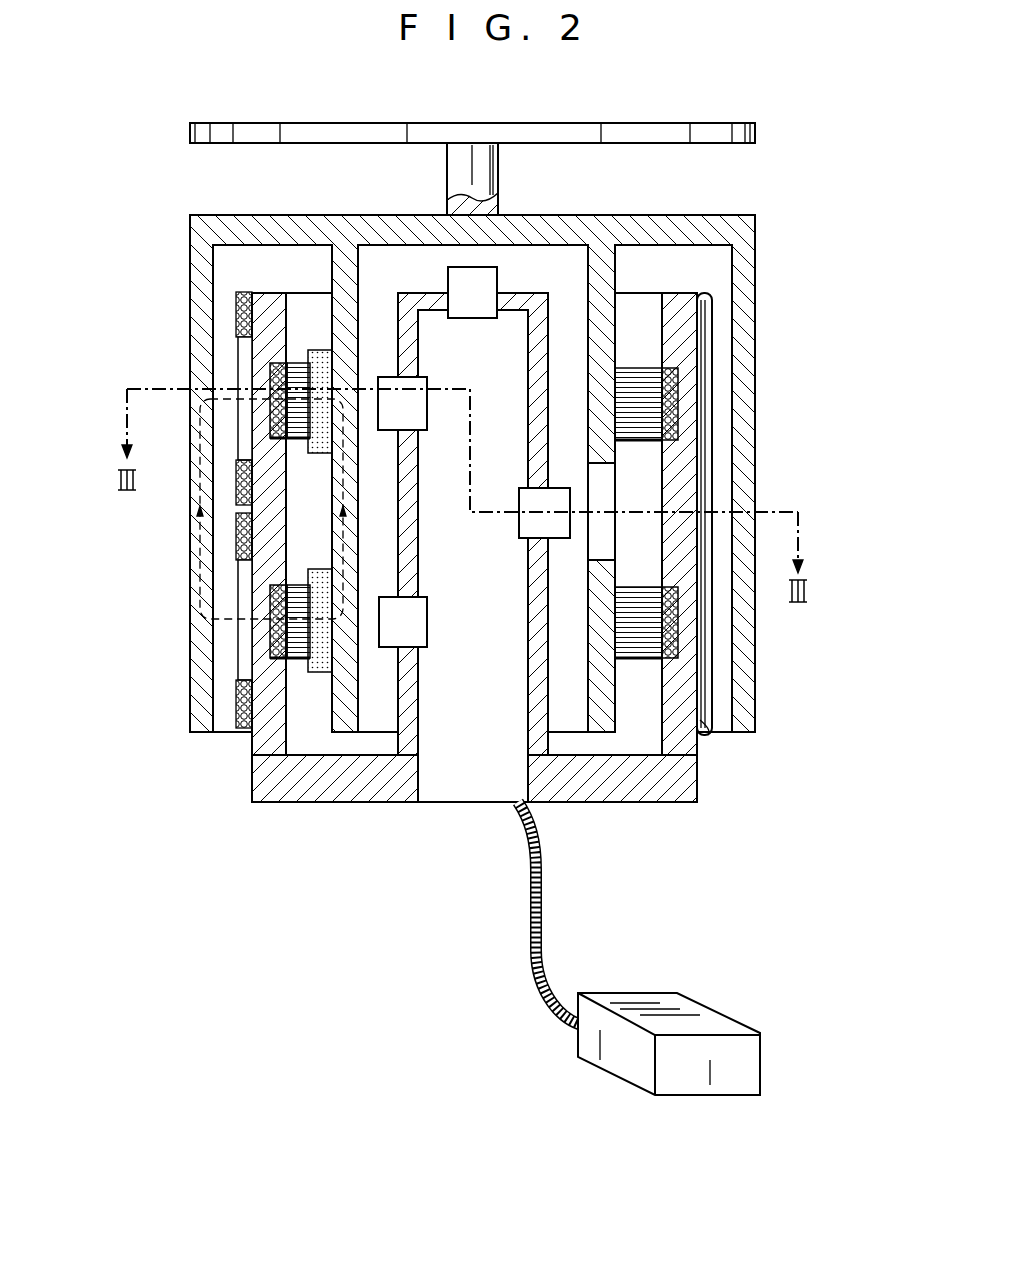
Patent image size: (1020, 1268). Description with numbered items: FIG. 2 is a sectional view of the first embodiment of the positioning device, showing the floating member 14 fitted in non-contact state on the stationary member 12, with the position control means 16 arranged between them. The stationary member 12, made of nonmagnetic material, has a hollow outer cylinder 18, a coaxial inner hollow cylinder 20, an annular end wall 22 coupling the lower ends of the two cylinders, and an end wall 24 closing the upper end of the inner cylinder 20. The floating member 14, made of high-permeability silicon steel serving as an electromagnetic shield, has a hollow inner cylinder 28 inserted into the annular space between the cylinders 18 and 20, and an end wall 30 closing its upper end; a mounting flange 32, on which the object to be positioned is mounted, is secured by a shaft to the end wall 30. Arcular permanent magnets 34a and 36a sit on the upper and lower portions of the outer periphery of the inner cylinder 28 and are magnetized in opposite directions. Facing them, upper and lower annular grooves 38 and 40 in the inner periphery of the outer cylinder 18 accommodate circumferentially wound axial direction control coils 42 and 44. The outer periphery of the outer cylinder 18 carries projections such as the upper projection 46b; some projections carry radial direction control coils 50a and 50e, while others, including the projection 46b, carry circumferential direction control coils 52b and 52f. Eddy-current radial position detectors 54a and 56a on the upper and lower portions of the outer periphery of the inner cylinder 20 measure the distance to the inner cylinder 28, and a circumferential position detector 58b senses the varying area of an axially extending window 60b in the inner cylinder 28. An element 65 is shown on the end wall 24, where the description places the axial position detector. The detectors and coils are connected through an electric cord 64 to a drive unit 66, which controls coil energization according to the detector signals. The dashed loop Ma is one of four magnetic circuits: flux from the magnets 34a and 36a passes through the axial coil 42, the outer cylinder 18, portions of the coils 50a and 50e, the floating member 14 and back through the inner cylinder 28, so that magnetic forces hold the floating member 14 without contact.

The stationary member 12 is at (312, 803).
The floating member 14 is at (584, 224).
The position control means 16 is at (296, 312).
The hollow outer cylinder 18 is at (690, 340).
The inner hollow cylinder 20 is at (528, 700).
The annular end wall 22 is at (617, 800).
The end wall 24 is at (527, 300).
The hollow inner cylinder 28 is at (592, 344).
The end wall 30 is at (396, 224).
The mounting flange 32 is at (286, 122).
The permanent magnet 34a is at (325, 347).
The permanent magnet 36a is at (318, 675).
The upper annular groove 38 is at (660, 374).
The lower annular groove 40 is at (640, 652).
The axial direction control coil 42 is at (300, 432).
The axial direction control coil 44 is at (300, 595).
The upper projection 46b is at (236, 372).
The radial direction control coil 50a is at (236, 300).
The radial direction control coil 50e is at (238, 732).
The circumferential direction control coil 52b is at (703, 298).
The circumferential direction control coil 52f is at (708, 735).
The radial position detector 54a is at (430, 388).
The radial position detector 56a is at (420, 613).
The circumferential position detector 58b is at (518, 522).
The window 60b is at (608, 497).
The cable 64 is at (524, 955).
The sensor 65 is at (480, 312).
The drive unit 66 is at (700, 1012).
The magnetic circuit Ma is at (200, 582).